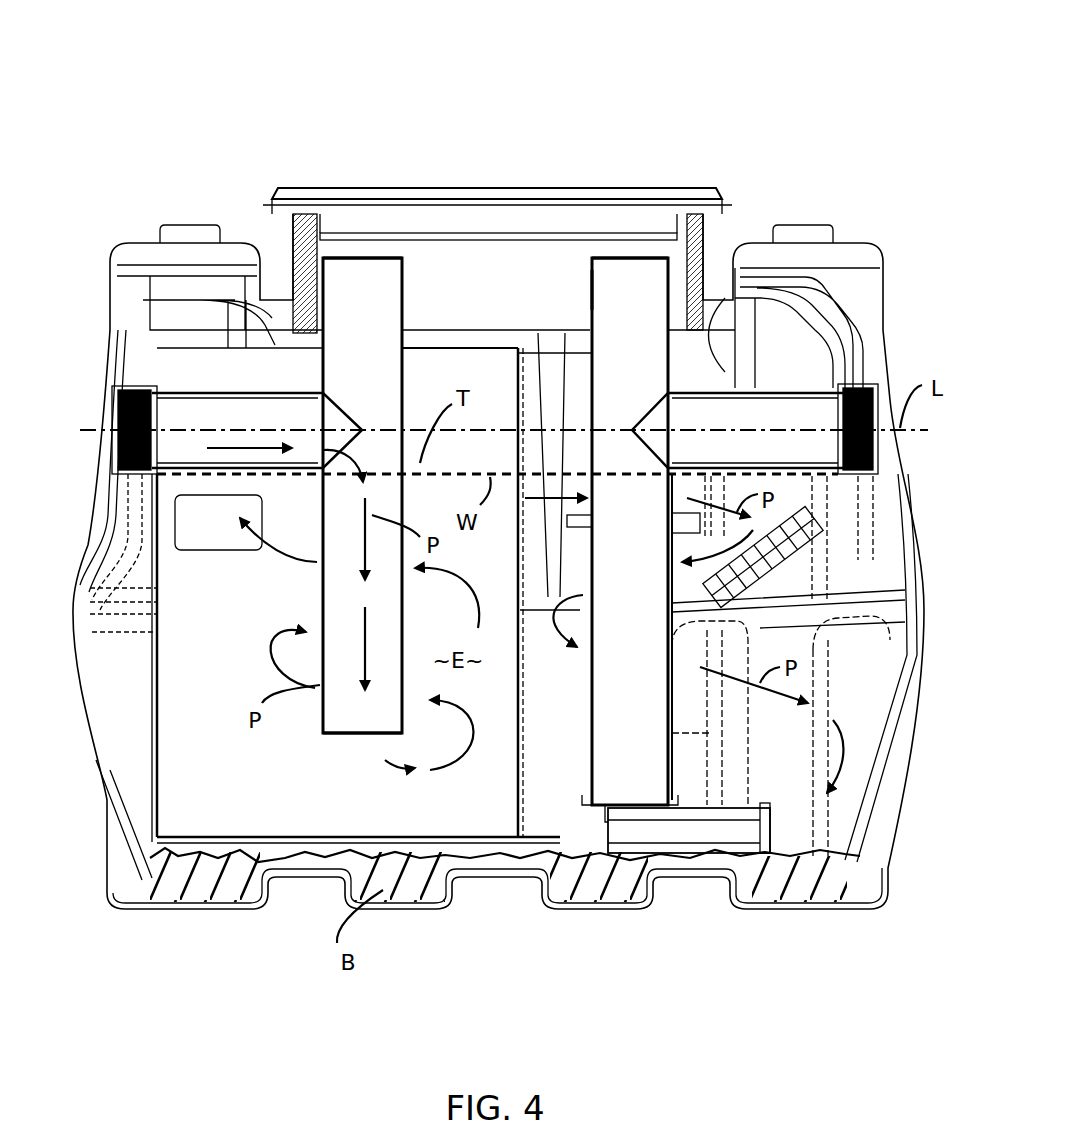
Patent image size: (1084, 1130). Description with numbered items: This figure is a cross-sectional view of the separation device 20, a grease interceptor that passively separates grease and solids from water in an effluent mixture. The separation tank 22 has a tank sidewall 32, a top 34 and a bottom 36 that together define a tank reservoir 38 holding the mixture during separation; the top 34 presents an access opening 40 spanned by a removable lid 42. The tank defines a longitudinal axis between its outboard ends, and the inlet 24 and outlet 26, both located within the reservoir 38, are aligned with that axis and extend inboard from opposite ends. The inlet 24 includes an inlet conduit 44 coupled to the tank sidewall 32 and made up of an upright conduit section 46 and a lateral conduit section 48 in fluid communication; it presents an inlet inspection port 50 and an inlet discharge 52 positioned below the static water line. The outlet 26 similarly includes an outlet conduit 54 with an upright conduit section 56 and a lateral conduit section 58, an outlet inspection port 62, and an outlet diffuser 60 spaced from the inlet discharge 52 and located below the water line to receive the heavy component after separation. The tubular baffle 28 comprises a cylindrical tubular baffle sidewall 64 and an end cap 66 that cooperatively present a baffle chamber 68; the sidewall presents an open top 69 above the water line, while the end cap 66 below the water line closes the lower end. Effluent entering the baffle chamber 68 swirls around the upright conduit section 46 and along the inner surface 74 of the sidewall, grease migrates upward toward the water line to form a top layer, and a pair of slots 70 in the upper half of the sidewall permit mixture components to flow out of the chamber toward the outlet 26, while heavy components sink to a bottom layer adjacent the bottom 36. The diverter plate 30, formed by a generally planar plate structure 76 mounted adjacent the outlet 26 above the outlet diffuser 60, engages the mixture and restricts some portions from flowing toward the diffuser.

The separation device 20 is at (781, 54).
The separation tank 22 is at (879, 867).
The inlet 24 is at (420, 297).
The outlet 26 is at (593, 288).
The tubular baffle 28 is at (152, 713).
The diverter plate 30 is at (812, 523).
The tank sidewall 32 is at (883, 283).
The top 34 is at (750, 243).
The bottom 36 is at (705, 877).
The tank reservoir 38 is at (590, 893).
The access opening 40 is at (694, 247).
The removable lid 42 is at (595, 236).
The inlet conduit 44 is at (203, 390).
The upright conduit section 46 is at (408, 268).
The lateral conduit section 48 is at (245, 391).
The inlet inspection port 50 is at (352, 258).
The inlet discharge 52 is at (323, 738).
The outlet conduit 54 is at (793, 388).
The upright conduit section 56 is at (590, 262).
The lateral conduit section 58 is at (767, 389).
The outlet diffuser 60 is at (792, 833).
The outlet inspection port 62 is at (615, 257).
The tubular baffle sidewall 64 is at (510, 773).
The end cap 66 is at (187, 837).
The baffle chamber 68 is at (163, 677).
The open top 69 is at (481, 348).
The slots 70 is at (192, 550).
The inner surface 74 is at (163, 782).
The plate structure 76 is at (805, 542).